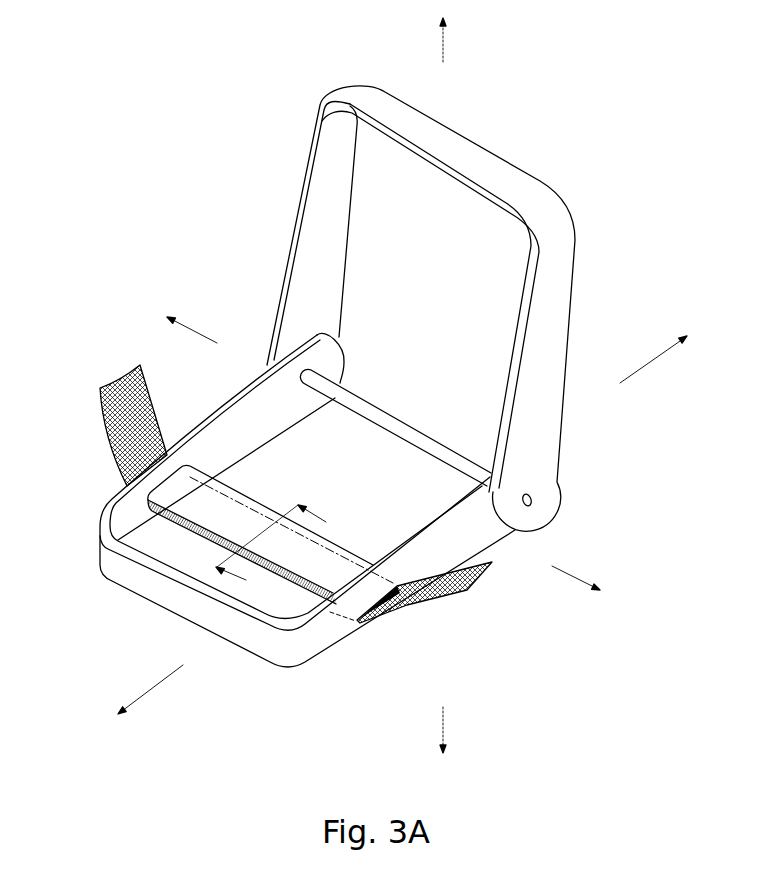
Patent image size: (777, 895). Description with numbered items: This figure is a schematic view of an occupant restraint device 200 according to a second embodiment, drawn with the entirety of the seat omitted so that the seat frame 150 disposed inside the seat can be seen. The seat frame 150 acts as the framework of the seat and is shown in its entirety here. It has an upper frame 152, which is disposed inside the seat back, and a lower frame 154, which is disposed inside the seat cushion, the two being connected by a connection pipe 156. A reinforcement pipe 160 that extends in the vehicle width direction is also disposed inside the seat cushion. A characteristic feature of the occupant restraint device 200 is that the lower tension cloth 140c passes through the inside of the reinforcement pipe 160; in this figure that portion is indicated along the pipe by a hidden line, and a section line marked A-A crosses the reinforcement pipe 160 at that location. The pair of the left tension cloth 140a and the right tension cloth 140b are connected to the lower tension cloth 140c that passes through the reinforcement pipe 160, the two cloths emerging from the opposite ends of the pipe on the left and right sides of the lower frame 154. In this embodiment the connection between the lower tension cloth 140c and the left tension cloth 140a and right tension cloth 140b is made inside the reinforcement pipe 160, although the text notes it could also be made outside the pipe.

The occupant restraint device 200 is at (222, 94).
The seat frame 150 is at (600, 208).
The upper frame 152 is at (474, 146).
The lower frame 154 is at (320, 656).
The connection pipe 156 is at (414, 430).
The reinforcement pipe 160 is at (208, 508).
The left tension cloth 140a is at (455, 597).
The right tension cloth 140b is at (115, 421).
The lower tension cloth 140c is at (232, 496).